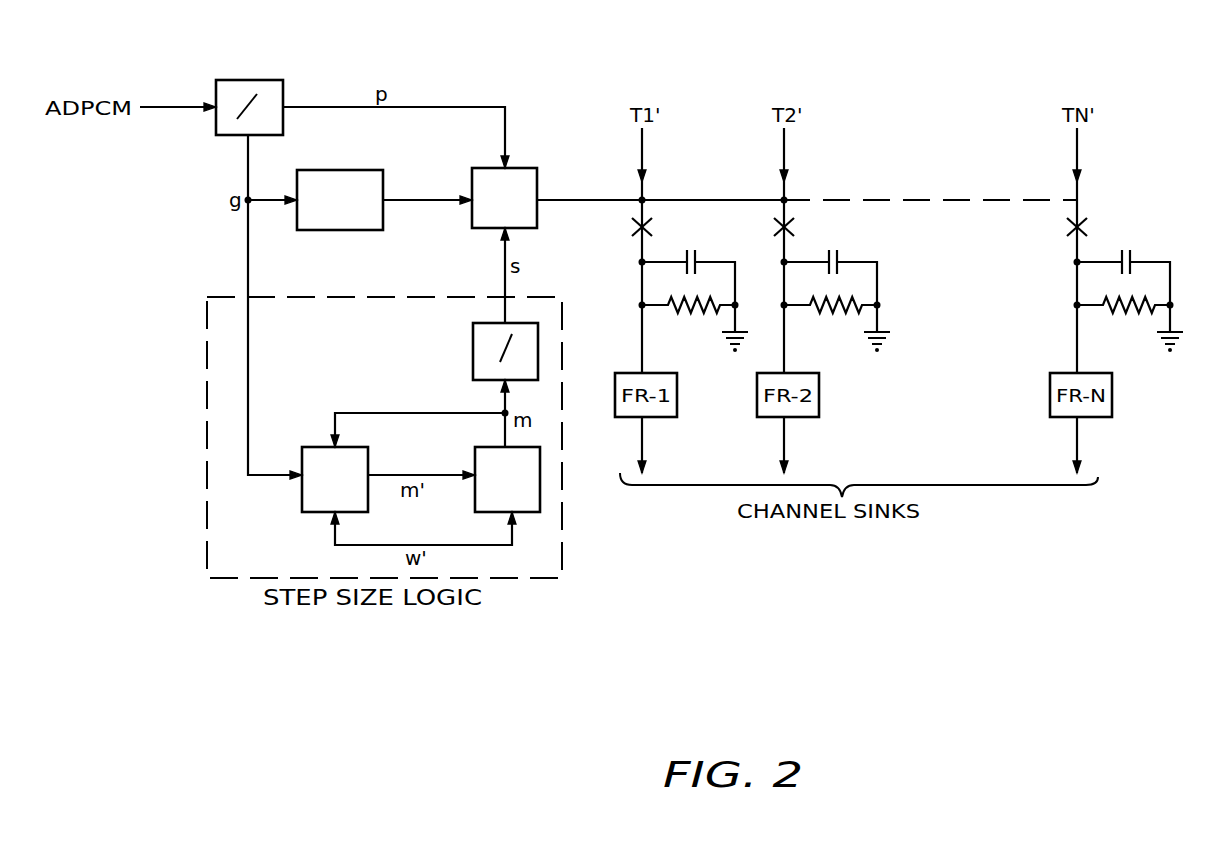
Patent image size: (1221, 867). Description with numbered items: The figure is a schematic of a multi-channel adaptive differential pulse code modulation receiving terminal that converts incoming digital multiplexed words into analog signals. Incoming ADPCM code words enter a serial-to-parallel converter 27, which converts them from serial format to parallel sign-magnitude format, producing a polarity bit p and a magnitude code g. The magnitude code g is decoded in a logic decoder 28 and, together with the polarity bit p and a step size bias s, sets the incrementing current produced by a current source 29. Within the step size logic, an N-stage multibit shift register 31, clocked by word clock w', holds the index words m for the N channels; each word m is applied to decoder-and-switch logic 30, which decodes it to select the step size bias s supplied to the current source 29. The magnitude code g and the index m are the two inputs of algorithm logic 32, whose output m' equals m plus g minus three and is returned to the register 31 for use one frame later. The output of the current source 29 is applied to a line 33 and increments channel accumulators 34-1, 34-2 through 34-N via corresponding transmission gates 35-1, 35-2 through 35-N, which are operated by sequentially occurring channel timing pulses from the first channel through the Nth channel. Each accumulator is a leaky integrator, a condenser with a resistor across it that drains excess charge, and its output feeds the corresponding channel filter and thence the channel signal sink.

The serial-to-parallel converter 27 is at (265, 87).
The logic decoder 28 is at (358, 172).
The current source 29 is at (523, 178).
The decoder-and-switch logic 30 is at (473, 363).
The N-stage multibit shift register 31 is at (520, 503).
The algorithm logic 32 is at (308, 500).
The line 33 is at (810, 199).
The channel accumulator 34-1 is at (752, 237).
The channel accumulator 34-2 is at (862, 275).
The channel accumulator 34-N is at (1157, 268).
The transmission gate 35-1 is at (655, 228).
The transmission gate 35-2 is at (797, 228).
The transmission gate 35-N is at (1090, 228).